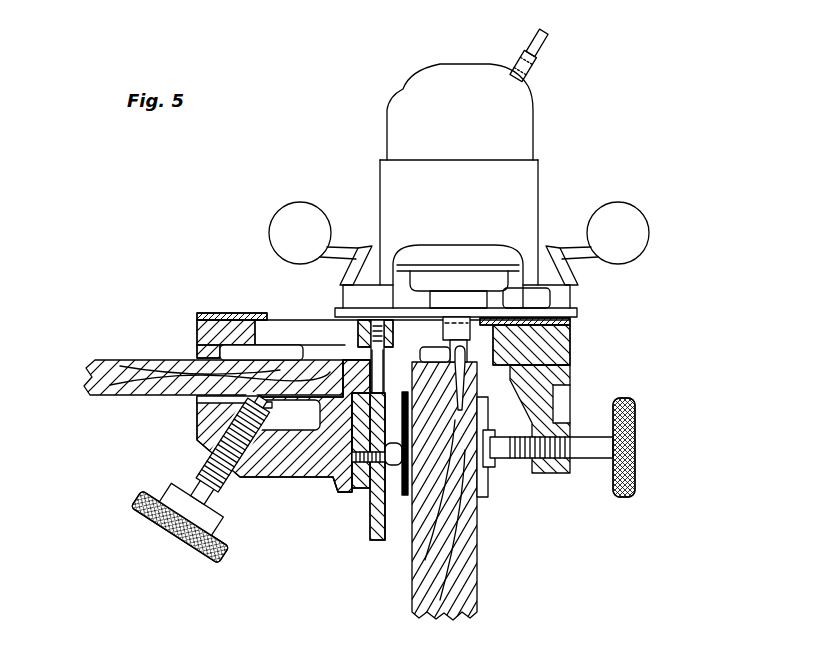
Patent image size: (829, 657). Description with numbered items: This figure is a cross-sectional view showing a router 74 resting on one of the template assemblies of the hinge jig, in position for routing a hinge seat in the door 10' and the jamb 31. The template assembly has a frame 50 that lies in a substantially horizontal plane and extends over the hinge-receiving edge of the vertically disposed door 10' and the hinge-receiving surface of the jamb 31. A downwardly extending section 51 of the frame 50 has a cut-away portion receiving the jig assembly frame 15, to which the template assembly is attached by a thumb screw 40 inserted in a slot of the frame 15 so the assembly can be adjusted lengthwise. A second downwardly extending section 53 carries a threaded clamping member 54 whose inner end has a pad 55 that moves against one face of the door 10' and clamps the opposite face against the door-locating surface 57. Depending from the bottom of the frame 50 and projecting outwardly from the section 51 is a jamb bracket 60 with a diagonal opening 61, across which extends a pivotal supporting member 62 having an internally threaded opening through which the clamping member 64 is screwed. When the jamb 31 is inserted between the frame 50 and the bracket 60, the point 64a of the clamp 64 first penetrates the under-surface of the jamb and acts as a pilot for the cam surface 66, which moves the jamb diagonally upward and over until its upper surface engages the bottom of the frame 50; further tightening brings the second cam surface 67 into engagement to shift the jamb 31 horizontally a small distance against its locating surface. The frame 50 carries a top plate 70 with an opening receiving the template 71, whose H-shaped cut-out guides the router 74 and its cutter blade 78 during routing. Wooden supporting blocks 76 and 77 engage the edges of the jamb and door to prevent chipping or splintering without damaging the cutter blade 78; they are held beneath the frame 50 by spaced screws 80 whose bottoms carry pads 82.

The routing tool 74 is at (535, 172).
The top plate 70 is at (213, 315).
The template 71 is at (253, 316).
The template frame 50 is at (195, 327).
The screw 80 is at (357, 319).
The pad 82 is at (366, 330).
The point 64a is at (262, 398).
The wooden supporting block 76 is at (347, 362).
The wooden supporting block 77 is at (405, 358).
The cutter blade 78 is at (470, 365).
The second downwardly extending section 53 is at (570, 372).
The threaded clamping member 54 is at (635, 445).
The jamb 31 is at (120, 392).
The second cam surface 67 is at (215, 400).
The pivotal supporting member 62 is at (225, 428).
The opening 61 is at (212, 442).
The cam surface 66 is at (271, 406).
The jamb bracket 60 is at (282, 468).
The clamping member 64 is at (175, 537).
The thumb screw 40 is at (350, 487).
The downwardly extending section 51 is at (362, 490).
The jig assembly frame 15 is at (377, 540).
The door-locating surface 57 is at (412, 495).
The door 10' is at (473, 491).
The pad 55 is at (487, 497).